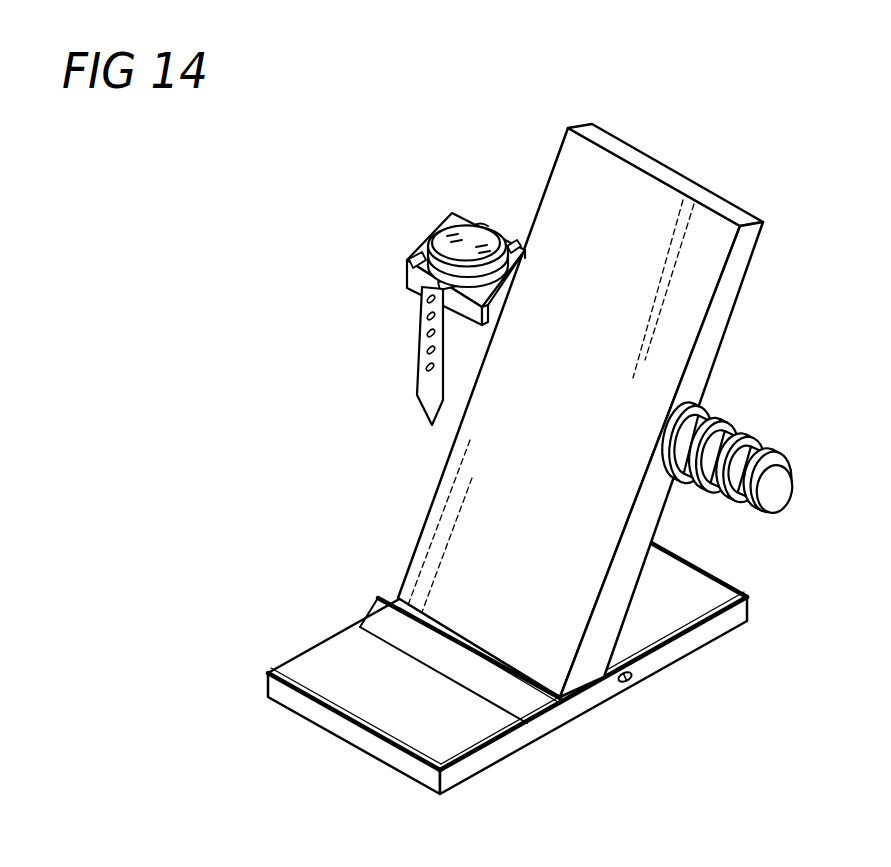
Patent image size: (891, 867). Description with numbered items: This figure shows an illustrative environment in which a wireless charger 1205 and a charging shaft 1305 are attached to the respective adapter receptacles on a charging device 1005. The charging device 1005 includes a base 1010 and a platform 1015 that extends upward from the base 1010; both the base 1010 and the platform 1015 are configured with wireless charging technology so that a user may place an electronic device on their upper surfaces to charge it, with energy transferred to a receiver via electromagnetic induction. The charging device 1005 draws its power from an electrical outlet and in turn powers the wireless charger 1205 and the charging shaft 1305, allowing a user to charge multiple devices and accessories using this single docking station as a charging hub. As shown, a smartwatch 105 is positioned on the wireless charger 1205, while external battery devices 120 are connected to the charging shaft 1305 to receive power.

The charging device 1005 is at (562, 449).
The base 1010 is at (752, 598).
The platform 1015 is at (738, 310).
The smartwatch 105 is at (447, 227).
The wireless charger 1205 is at (405, 266).
The external battery devices 120 is at (769, 448).
The charging shaft 1305 is at (797, 477).